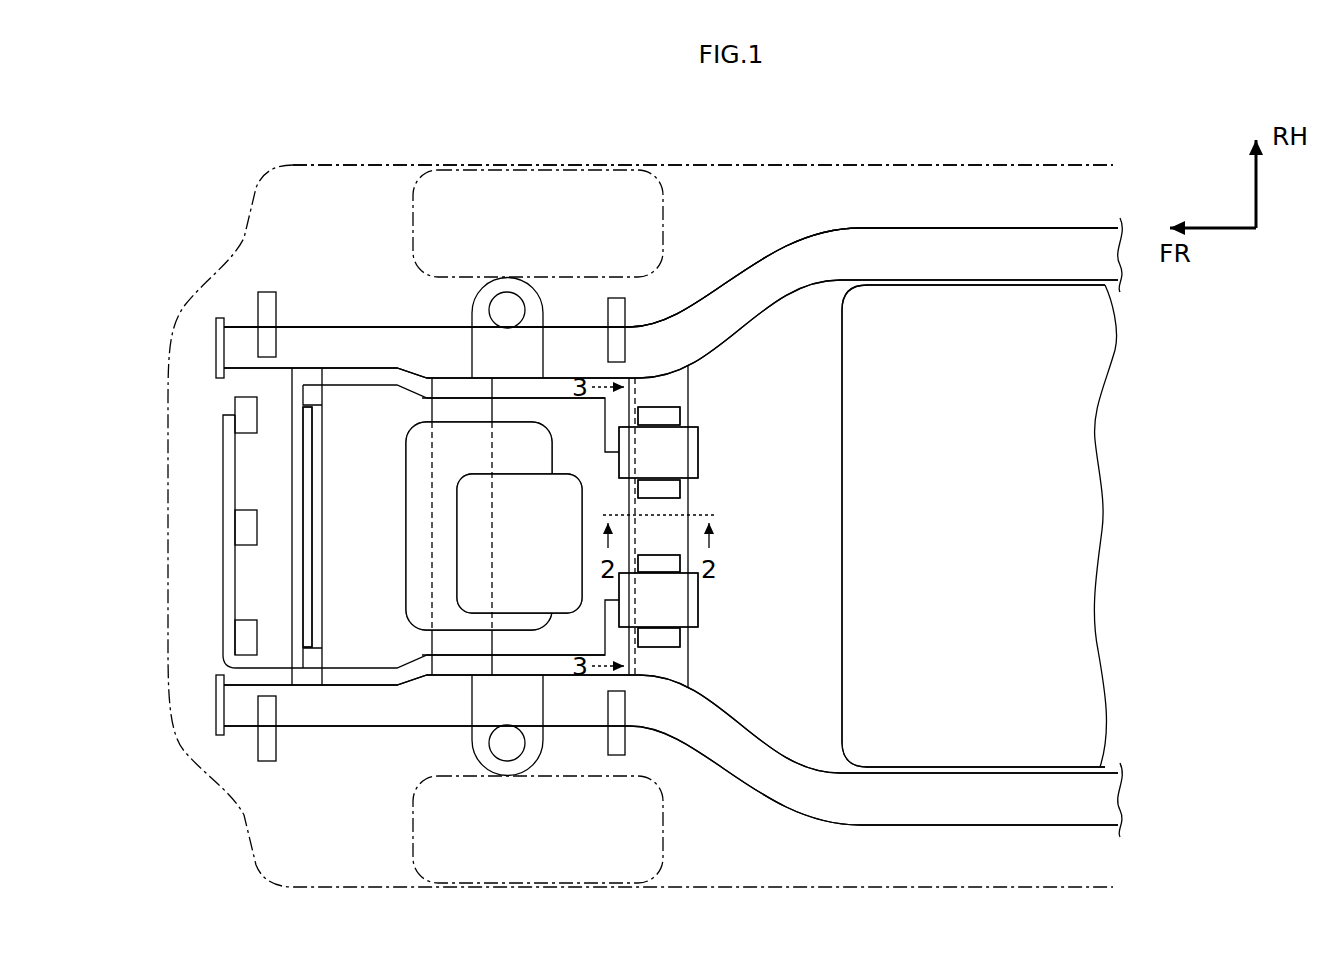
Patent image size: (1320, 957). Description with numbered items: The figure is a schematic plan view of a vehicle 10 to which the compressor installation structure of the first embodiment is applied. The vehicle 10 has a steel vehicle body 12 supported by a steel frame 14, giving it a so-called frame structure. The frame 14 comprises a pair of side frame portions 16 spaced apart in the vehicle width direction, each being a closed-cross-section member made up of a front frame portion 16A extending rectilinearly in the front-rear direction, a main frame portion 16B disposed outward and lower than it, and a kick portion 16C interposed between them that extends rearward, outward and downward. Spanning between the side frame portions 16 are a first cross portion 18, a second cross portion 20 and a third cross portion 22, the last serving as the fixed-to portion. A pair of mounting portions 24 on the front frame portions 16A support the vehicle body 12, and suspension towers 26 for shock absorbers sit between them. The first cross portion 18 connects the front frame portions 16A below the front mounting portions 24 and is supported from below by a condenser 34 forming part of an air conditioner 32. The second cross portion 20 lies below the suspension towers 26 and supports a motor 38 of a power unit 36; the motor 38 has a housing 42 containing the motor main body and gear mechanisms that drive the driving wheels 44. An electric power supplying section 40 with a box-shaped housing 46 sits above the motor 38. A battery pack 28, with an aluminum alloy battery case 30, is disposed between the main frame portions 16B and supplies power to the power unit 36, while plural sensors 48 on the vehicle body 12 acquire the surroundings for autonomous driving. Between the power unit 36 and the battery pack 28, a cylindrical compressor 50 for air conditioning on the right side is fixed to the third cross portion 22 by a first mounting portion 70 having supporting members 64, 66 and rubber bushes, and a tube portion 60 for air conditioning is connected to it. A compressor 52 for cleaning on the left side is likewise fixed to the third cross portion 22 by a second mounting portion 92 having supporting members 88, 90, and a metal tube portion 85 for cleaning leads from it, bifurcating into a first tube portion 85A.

The vehicle 10 is at (1064, 150).
The vehicle body 12 is at (768, 166).
The frame 14 is at (1104, 206).
The side frame portion 16 is at (870, 225).
The front frame portion 16A is at (333, 340).
The main frame portion 16B is at (958, 240).
The kick portion 16C is at (713, 305).
The first cross portion 18 is at (320, 400).
The second cross portion 20 is at (485, 410).
The third cross portion 22 is at (688, 378).
The mounting portion 24 is at (265, 300).
The suspension tower 26 is at (478, 305).
The battery pack 28 is at (1040, 526).
The battery case 30 is at (1092, 373).
The air conditioner 32 is at (352, 527).
The condenser 34 is at (305, 518).
The power unit 36 is at (395, 561).
The motor 38 is at (479, 526).
The electric power supplying section 40 is at (519, 543).
The housing 42 is at (468, 458).
The driving wheel 44 is at (413, 213).
The housing 46 is at (492, 520).
The sensor 48 is at (247, 420).
The compressor for air conditioning 50 is at (688, 442).
The compressor for cleaning 52 is at (690, 607).
The tube portion for air conditioning 60 is at (368, 385).
The supporting member 64 is at (685, 490).
The supporting member 66 is at (676, 417).
The first mounting portion 70 is at (760, 406).
The tube portion for cleaning 85 is at (342, 666).
The first tube portion 85A is at (223, 595).
The supporting member 88 is at (680, 642).
The supporting member 90 is at (680, 565).
The second mounting portion 92 is at (759, 655).